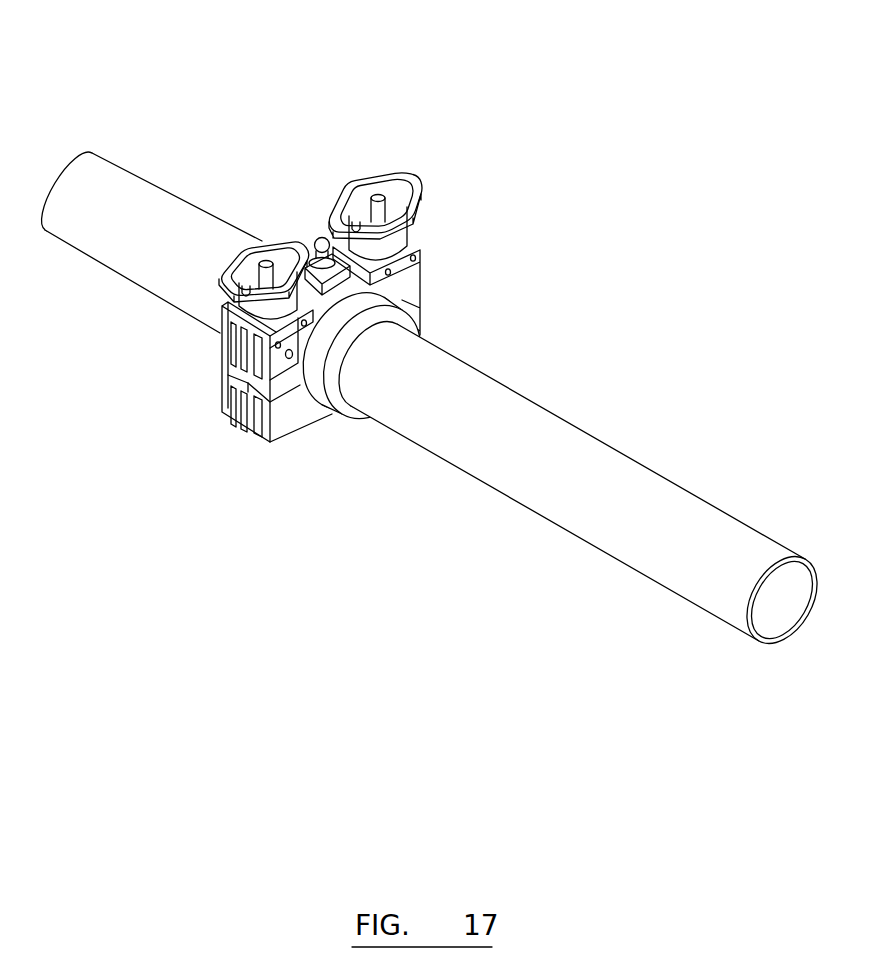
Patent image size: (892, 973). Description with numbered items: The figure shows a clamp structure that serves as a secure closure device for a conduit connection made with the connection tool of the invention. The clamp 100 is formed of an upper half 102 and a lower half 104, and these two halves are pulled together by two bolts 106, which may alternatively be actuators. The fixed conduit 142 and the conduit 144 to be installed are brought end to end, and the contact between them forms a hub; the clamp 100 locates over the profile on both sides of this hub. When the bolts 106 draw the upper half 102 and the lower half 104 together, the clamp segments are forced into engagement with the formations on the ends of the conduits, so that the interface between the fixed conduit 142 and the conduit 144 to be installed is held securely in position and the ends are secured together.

The clamp 100 is at (338, 295).
The upper half 102 is at (217, 340).
The lower half 104 is at (282, 418).
The bolts 106 is at (268, 258).
The fixed conduit 142 is at (148, 252).
The conduit to be installed 144 is at (602, 508).